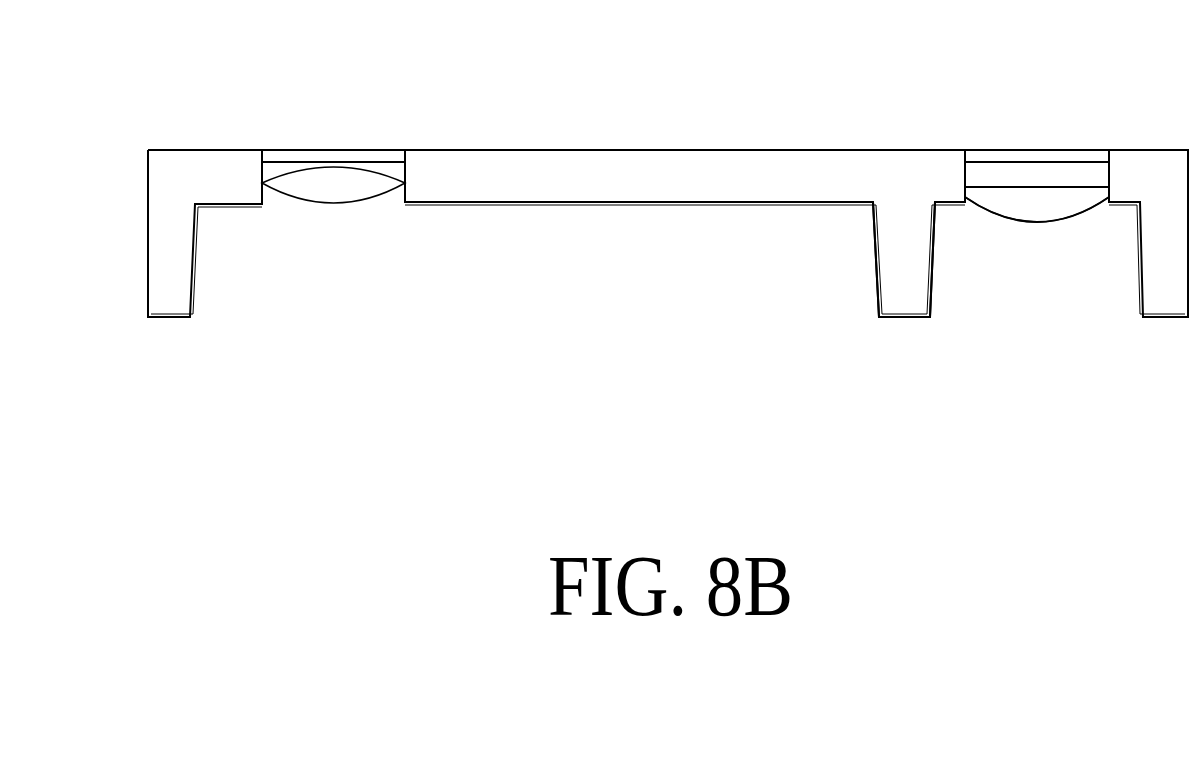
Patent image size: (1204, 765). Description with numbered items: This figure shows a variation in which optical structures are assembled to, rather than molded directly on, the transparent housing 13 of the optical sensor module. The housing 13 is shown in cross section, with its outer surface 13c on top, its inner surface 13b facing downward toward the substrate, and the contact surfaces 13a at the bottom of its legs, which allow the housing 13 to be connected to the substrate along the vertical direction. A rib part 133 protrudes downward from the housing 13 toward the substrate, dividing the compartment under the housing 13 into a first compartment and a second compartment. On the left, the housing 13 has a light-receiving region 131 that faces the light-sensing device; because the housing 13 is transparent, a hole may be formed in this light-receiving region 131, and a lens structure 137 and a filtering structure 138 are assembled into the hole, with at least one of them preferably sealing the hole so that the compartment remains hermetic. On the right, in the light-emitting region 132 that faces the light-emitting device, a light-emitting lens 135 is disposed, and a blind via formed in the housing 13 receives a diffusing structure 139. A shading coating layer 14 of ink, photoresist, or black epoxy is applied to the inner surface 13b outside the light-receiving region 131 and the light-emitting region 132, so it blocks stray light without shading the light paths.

The housing 13 is at (790, 160).
The contact surface 13a is at (167, 330).
The inner surface 13b is at (240, 216).
The outer surface 13c is at (202, 138).
The light-receiving region 131 is at (313, 254).
The light-emitting region 132 is at (1030, 262).
The rib part 133 is at (915, 305).
The light-emitting lens 135 is at (1072, 208).
The lens structure 137 is at (333, 188).
The filtering structure 138 is at (373, 157).
The diffusing structure 139 is at (1077, 157).
The shading coating layer 14 is at (637, 207).